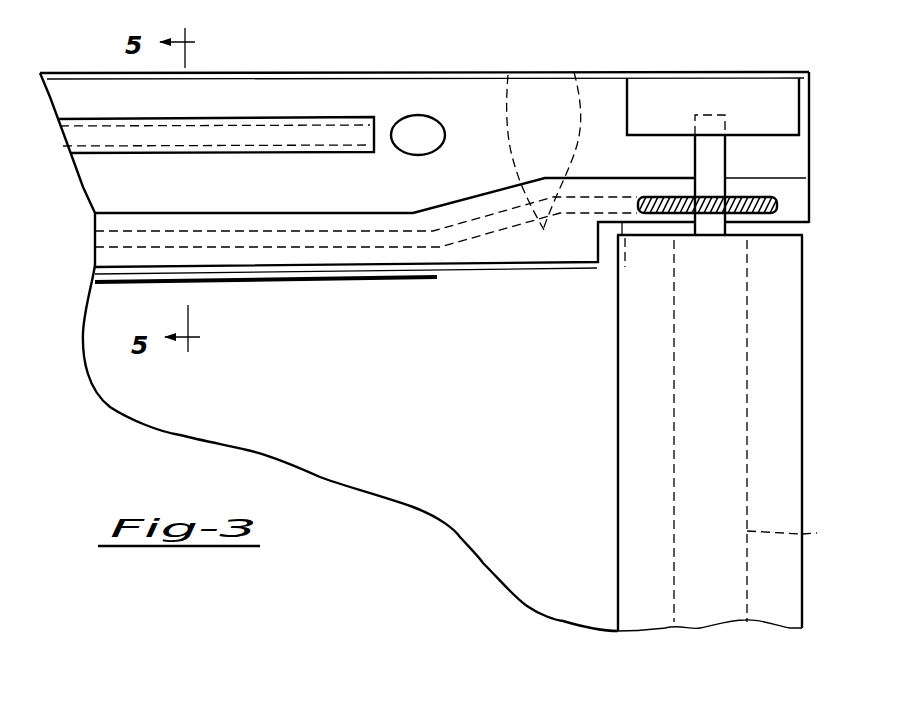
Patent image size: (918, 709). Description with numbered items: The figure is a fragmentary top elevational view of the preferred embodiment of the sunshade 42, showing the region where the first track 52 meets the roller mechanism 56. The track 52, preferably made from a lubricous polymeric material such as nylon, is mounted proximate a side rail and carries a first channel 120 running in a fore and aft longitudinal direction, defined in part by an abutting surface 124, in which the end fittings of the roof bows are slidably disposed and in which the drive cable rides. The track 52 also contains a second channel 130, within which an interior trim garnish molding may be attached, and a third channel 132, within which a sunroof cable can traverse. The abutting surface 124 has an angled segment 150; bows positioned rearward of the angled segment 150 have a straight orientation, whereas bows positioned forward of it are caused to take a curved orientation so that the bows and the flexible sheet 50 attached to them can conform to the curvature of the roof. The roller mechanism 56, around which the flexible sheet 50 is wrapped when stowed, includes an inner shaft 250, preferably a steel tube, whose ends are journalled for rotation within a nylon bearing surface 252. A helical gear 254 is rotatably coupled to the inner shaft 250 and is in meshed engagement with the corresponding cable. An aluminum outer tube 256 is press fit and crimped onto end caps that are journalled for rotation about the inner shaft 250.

The sunshade 42 is at (560, 626).
The flexible sheet 50 is at (618, 479).
The first track 52 is at (401, 98).
The roller mechanism 56 is at (612, 356).
The first channel 120 is at (470, 243).
The abutting surface 124 is at (508, 75).
The second channel 130 is at (317, 275).
The third channel 132 is at (260, 140).
The angled segment 150 is at (574, 72).
The inner shaft 250 is at (715, 155).
The nylon bearing surface 252 is at (660, 100).
The helical gear 254 is at (745, 205).
The outer tube 256 is at (840, 514).